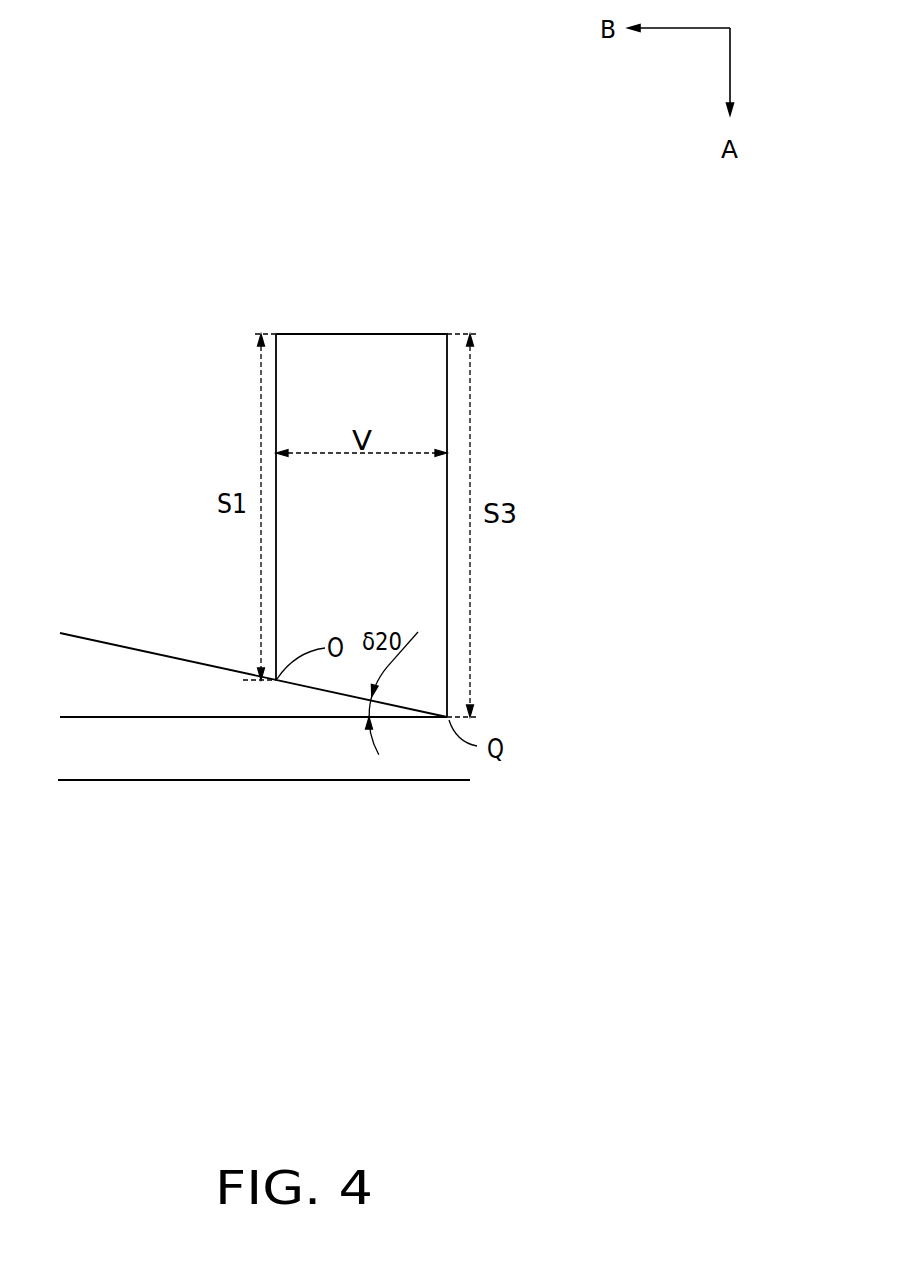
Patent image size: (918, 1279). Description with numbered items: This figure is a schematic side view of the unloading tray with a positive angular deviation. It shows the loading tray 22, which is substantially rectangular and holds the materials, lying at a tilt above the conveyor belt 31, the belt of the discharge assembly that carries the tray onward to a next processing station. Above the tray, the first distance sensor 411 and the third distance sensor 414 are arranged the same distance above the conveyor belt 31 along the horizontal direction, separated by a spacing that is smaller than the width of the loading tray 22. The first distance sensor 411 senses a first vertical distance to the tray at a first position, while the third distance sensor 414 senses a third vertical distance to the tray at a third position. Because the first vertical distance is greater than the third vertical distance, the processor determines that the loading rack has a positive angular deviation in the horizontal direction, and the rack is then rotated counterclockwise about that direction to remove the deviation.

The first distance sensor 411 is at (277, 322).
The third distance sensor 414 is at (440, 324).
The loading tray 22 is at (176, 658).
The conveyor belt 31 is at (135, 717).